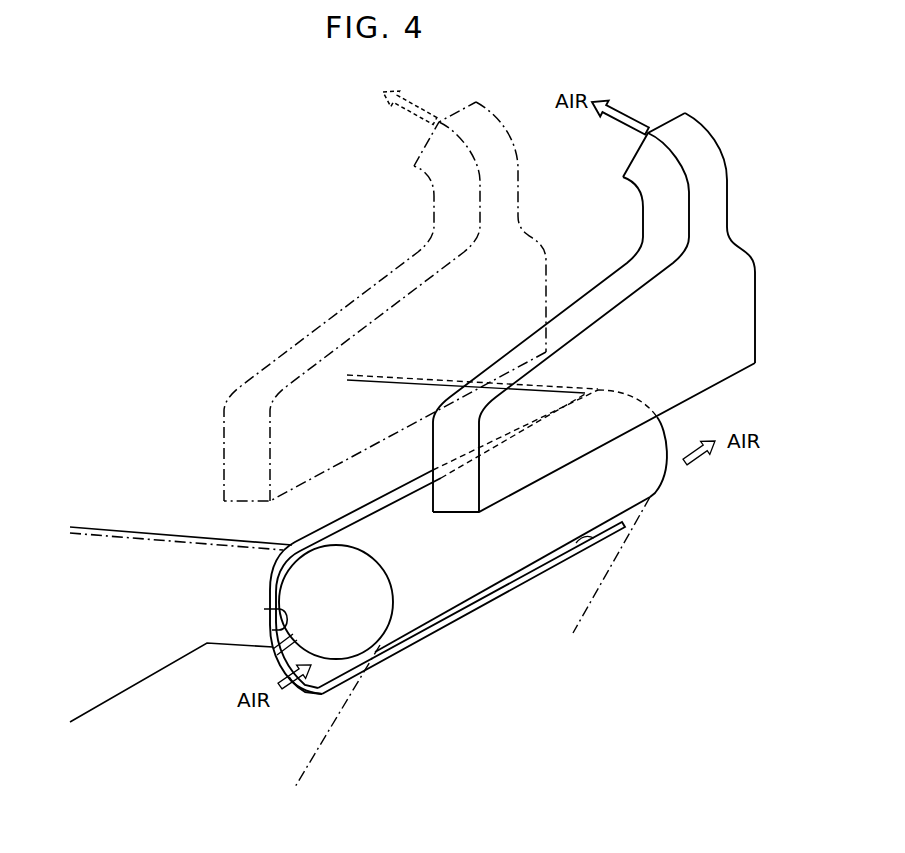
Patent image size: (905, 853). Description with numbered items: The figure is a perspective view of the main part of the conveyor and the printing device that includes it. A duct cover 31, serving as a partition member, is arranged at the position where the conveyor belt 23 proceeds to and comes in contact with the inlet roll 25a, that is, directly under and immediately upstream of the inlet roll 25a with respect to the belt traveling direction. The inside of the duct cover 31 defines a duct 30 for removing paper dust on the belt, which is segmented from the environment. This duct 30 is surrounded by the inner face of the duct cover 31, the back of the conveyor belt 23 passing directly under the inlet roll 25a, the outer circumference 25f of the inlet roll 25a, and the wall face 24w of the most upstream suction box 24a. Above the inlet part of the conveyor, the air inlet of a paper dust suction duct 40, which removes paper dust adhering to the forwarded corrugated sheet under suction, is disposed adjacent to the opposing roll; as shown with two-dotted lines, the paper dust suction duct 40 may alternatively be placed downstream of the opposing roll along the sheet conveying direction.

The paper dust suction duct 40 is at (367, 288).
The inlet roll 25a is at (637, 477).
The outer circumference of the inlet roll 25f is at (270, 662).
The duct 30 is at (320, 675).
The duct cover 31 is at (300, 697).
The most upstream suction box 24a is at (141, 617).
The wall face of the most upstream suction box 24w is at (282, 607).
The conveyor belt 23 is at (590, 584).